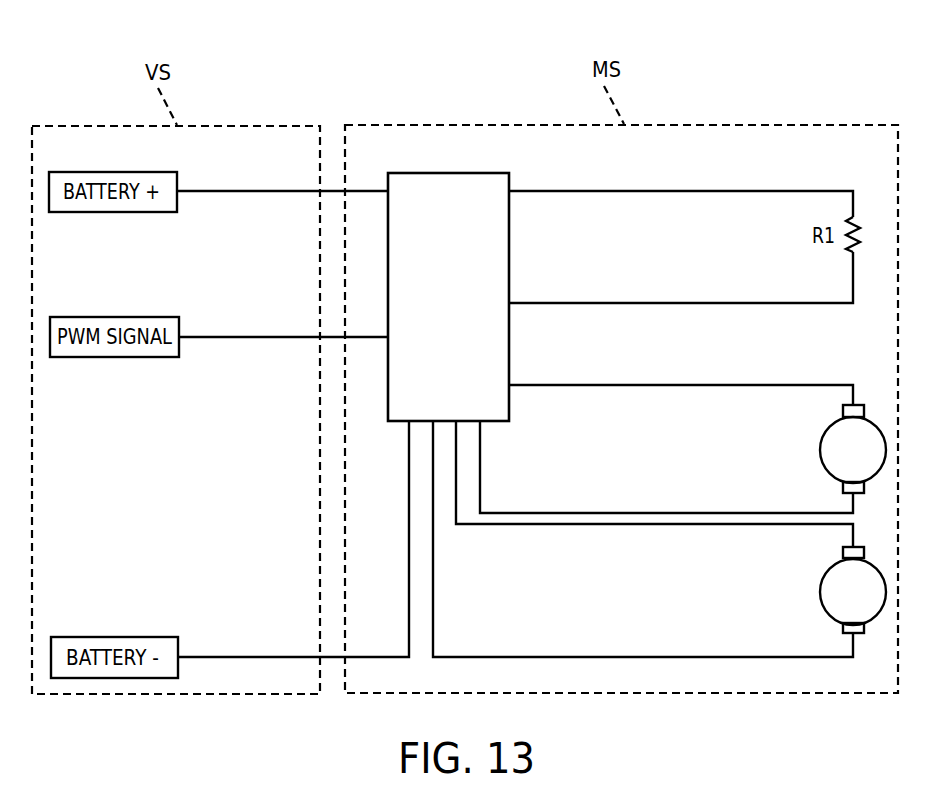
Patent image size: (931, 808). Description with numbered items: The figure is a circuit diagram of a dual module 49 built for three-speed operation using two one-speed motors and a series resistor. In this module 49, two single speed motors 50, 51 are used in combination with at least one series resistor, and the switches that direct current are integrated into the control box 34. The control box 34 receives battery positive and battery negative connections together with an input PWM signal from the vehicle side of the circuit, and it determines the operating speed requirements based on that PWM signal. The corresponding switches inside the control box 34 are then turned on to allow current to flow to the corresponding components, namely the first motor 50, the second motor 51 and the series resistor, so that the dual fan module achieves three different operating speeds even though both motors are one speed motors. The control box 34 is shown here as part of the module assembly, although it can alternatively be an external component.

The module 49 is at (760, 82).
The control box 34 is at (462, 339).
The single speed motor 50 is at (821, 449).
The single speed motor 51 is at (821, 591).